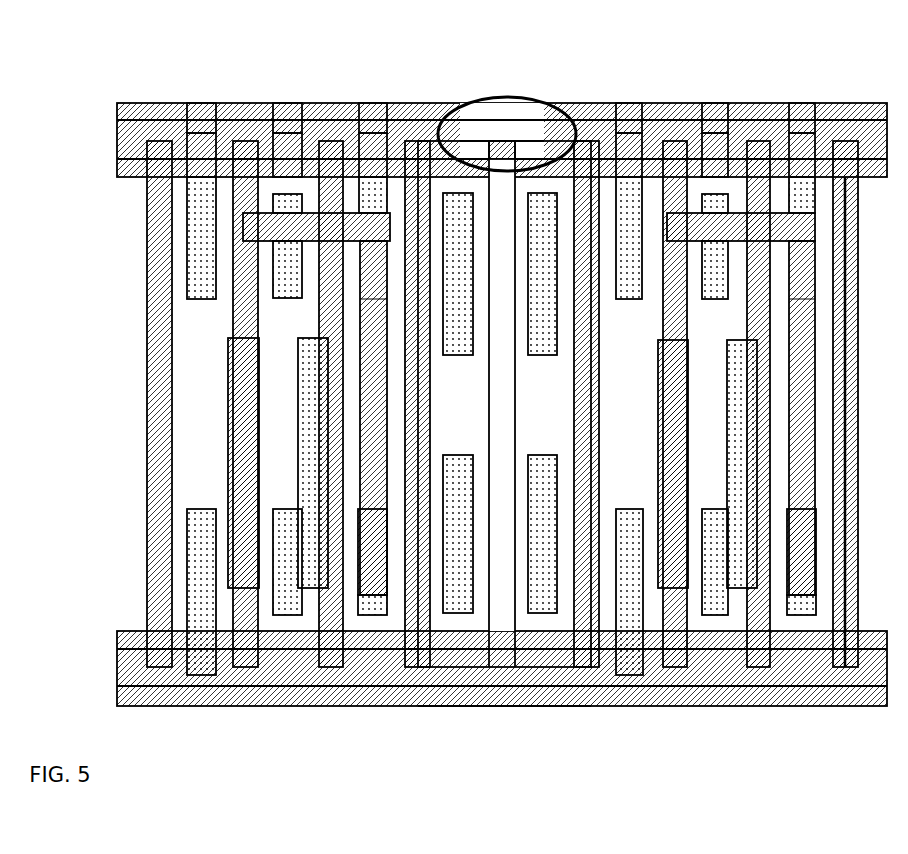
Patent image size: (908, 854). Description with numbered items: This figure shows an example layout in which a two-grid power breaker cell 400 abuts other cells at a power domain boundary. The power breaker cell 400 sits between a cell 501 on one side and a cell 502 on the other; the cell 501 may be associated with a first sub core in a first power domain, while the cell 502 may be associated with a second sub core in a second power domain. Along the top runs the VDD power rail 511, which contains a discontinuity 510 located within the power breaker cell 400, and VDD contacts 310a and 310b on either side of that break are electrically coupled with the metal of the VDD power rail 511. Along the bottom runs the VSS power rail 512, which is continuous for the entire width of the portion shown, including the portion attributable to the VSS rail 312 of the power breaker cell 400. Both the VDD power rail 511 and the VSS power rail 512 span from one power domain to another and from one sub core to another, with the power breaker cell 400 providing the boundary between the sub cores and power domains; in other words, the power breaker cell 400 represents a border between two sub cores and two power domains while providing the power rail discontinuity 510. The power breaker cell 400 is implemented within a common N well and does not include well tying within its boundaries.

The VDD power rail 511 is at (288, 101).
The VSS power rail 512 is at (114, 657).
The discontinuity 510 is at (505, 95).
The VDD contact 310a is at (416, 101).
The VDD contact 310b is at (579, 101).
The 2-grid power breaker cell 400 is at (417, 723).
The cell 501 is at (403, 723).
The cell 502 is at (598, 723).
The VSS rail 312 is at (526, 709).